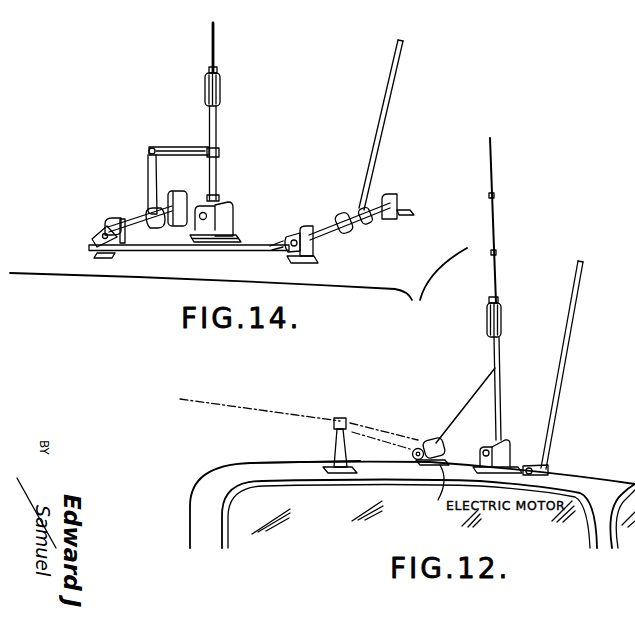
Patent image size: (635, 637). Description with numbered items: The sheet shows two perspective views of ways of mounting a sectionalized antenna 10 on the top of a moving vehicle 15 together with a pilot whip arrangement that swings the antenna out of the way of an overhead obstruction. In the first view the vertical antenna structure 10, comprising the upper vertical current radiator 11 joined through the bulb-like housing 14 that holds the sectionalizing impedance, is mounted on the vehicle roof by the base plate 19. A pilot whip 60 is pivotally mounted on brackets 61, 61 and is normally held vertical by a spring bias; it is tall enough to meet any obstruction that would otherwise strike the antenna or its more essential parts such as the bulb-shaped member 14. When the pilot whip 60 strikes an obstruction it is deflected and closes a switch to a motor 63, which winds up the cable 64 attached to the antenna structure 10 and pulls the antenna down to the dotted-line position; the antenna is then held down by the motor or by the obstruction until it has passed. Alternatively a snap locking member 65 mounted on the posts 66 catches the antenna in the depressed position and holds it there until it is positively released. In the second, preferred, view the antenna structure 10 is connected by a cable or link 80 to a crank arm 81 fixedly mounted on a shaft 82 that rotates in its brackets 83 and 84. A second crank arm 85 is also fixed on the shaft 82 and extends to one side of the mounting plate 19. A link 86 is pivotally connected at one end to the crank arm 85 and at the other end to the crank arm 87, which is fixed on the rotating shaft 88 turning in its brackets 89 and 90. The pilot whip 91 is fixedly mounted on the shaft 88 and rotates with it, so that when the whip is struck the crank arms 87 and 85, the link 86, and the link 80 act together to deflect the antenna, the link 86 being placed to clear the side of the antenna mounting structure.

In FIG. 14, the sectionalized antenna 10 is at (219, 123).
In FIG. 12, the sectionalized antenna 10 is at (508, 339).
In FIG. 14, the upper vertical current radiator 11 is at (216, 52).
In FIG. 12, the upper vertical current radiator 11 is at (498, 231).
In FIG. 14, the bulb-like housing 14 is at (222, 91).
In FIG. 12, the bulb-like housing 14 is at (502, 306).
In FIG. 14, the moving vehicle 15 is at (368, 270).
In FIG. 12, the moving vehicle 15 is at (258, 469).
In FIG. 14, the base plate 19 is at (237, 231).
In FIG. 12, the base plate 19 is at (511, 453).
In FIG. 12, the pilot whip 60 is at (575, 309).
In FIG. 12, the brackets 61 is at (546, 465).
In FIG. 12, the motor 63 is at (440, 440).
In FIG. 12, the cable 64 is at (469, 403).
In FIG. 12, the snap locking member 65 is at (343, 418).
In FIG. 12, the posts 66 is at (335, 437).
In FIG. 14, the cable or link 80 is at (179, 147).
In FIG. 14, the crank arm 81 is at (148, 165).
In FIG. 14, the shaft 82 is at (130, 222).
In FIG. 14, the bracket 83 is at (108, 225).
In FIG. 14, the bracket 84 is at (185, 192).
In FIG. 14, the crank arm 85 is at (95, 236).
In FIG. 14, the link 86 is at (173, 251).
In FIG. 14, the crank arm 87 is at (300, 231).
In FIG. 14, the rotating shaft 88 is at (380, 215).
In FIG. 14, the bracket 89 is at (393, 193).
In FIG. 14, the bracket 90 is at (317, 252).
In FIG. 14, the pilot whip 91 is at (389, 113).